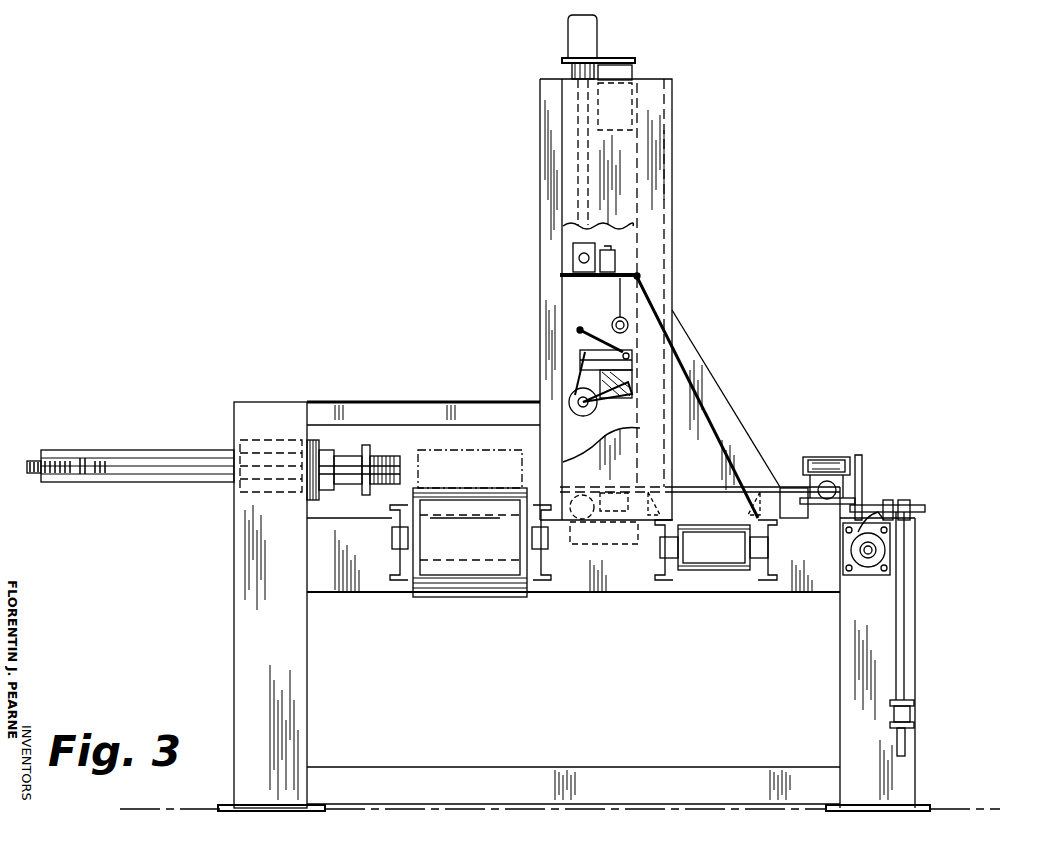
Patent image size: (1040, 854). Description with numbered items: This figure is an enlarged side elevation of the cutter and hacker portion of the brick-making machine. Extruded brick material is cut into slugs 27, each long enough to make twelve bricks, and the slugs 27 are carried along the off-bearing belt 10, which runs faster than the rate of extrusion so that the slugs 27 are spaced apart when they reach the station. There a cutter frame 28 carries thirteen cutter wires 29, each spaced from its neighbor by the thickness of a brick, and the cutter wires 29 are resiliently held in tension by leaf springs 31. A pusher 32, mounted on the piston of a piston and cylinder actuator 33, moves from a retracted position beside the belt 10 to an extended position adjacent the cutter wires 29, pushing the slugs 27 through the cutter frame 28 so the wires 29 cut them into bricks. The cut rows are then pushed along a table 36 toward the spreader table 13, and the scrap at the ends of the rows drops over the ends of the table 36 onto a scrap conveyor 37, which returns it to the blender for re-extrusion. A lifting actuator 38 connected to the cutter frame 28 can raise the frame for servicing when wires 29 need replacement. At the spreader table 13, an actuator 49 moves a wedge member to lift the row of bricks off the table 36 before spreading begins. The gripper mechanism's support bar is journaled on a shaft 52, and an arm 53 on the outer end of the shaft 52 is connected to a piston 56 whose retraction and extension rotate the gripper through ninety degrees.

The off-bearing belt 10 is at (460, 596).
The spreader table 13 is at (797, 487).
The slugs 27 is at (470, 450).
The cutter frame 28 is at (641, 276).
The cutter wires 29 is at (575, 348).
The leaf springs 31 is at (583, 328).
The pusher 32 is at (383, 488).
The piston and cylinder actuator 33 is at (147, 450).
The table 36 is at (682, 487).
The scrap conveyor 37 is at (727, 579).
The lifting actuator 38 is at (568, 24).
The actuator 49 is at (920, 505).
The shaft 52 is at (846, 570).
The arm 53 is at (851, 546).
The piston 56 is at (908, 548).